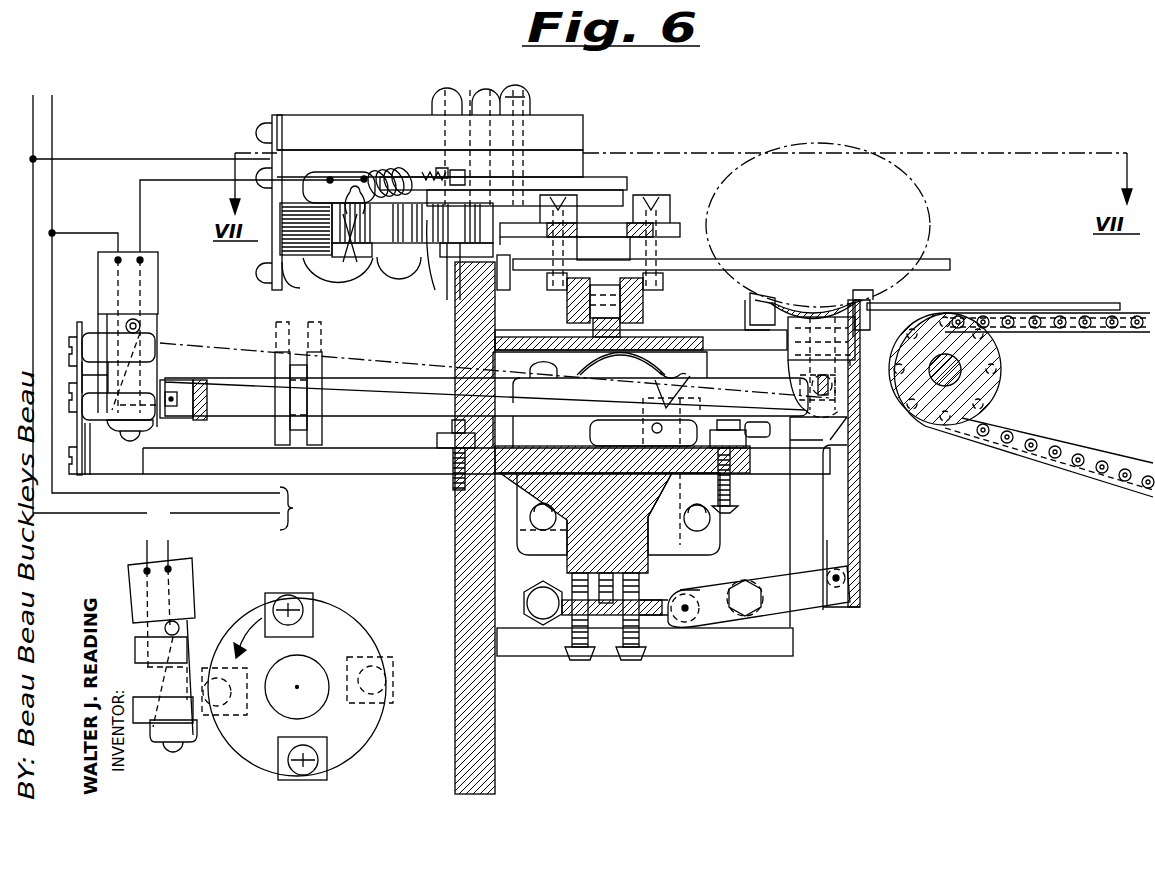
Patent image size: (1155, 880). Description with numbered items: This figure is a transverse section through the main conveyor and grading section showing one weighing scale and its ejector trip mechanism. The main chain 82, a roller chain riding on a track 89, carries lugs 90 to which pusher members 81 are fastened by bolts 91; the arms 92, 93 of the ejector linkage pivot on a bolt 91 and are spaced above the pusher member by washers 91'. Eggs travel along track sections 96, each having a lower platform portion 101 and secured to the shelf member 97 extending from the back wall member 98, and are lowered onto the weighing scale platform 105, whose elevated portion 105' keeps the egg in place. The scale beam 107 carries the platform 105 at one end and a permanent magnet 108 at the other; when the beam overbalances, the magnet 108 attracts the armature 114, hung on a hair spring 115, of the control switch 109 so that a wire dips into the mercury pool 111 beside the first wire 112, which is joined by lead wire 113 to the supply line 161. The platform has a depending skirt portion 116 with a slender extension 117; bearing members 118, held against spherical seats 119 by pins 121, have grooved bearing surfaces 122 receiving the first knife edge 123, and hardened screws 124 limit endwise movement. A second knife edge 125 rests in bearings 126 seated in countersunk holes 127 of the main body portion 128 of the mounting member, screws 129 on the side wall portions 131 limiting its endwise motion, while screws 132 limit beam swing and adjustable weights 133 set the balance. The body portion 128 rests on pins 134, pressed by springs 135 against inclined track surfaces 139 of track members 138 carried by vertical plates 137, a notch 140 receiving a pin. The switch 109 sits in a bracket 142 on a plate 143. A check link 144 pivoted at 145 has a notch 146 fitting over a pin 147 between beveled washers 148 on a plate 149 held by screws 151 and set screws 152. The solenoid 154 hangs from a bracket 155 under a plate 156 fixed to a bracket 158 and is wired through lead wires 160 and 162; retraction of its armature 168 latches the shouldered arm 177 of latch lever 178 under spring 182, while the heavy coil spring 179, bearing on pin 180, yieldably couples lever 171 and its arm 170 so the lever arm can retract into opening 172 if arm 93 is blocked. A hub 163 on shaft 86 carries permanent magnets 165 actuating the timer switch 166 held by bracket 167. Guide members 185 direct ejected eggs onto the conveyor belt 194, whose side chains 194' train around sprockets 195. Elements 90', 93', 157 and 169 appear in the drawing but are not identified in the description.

The pusher member 81 is at (818, 258).
The main chain 82 is at (640, 318).
The shaft 86 is at (315, 705).
The track 89 is at (578, 320).
The lugs 90 is at (731, 273).
The nut 90' is at (588, 288).
The bolts 91 is at (615, 251).
The washers 91' is at (577, 242).
The arm 92 is at (618, 243).
The arm 93 is at (590, 235).
The plate flange 93' is at (517, 242).
The track sections 96 is at (745, 322).
The shelf member 97 is at (640, 380).
The back wall member 98 is at (455, 550).
The lower platform portion 101 is at (748, 302).
The weighing scale platform 105 is at (812, 341).
The elevated portion 105' is at (901, 307).
The scale beam 107 is at (348, 355).
The permanent magnet 108 is at (200, 400).
The control switch 109 is at (158, 286).
The pool of mercury 111 is at (160, 425).
The first wire 112 is at (97, 280).
The lead wire 113 is at (78, 233).
The armature 114 is at (158, 328).
The hair spring 115 is at (150, 322).
The skirt portion 116 is at (845, 383).
The extension 117 is at (858, 500).
The bearing members 118 is at (800, 388).
The spherical seats 119 is at (830, 373).
The pins 121 is at (795, 363).
The grooved bearing surfaces 122 is at (848, 405).
The first knife edge 123 is at (850, 418).
The hardened screws 124 is at (860, 432).
The second knife edge 125 is at (657, 388).
The bearings 126 is at (690, 402).
The countersunk holes 127 is at (648, 430).
The main body portion 128 is at (566, 448).
The screws 129 is at (678, 385).
The side wall portions 131 is at (380, 472).
The screws 132 is at (447, 435).
The adjustable weights 133 is at (275, 370).
The pins 134 is at (543, 530).
The springs 135 is at (646, 360).
The vertical plates 137 is at (770, 482).
The track members 138 is at (782, 562).
The track surfaces 139 is at (680, 512).
The notch 140 is at (692, 528).
The bracket 142 is at (97, 430).
The plate 143 is at (77, 323).
The check link 144 is at (800, 606).
The pivot 145 is at (840, 578).
The notch 146 is at (683, 612).
The pin 147 is at (688, 614).
The beveled washers 148 is at (695, 600).
The plate 149 is at (648, 598).
The screws 151 is at (607, 640).
The screws 152 is at (628, 662).
The solenoid 154 is at (305, 268).
The bracket 155 is at (272, 246).
The plate 156 is at (365, 106).
The bolt 157 is at (510, 95).
The bracket 158 is at (570, 160).
The lead wire 160 is at (200, 183).
The supply line 161 is at (307, 508).
The lead wire 162 is at (184, 160).
The hub 163 is at (360, 625).
The permanent magnets 165 is at (298, 597).
The timer switch 166 is at (180, 598).
The bracket 167 is at (143, 727).
The armature 168 is at (330, 284).
The spring 169 is at (368, 280).
The arm 170 is at (390, 245).
The lever 171 is at (493, 222).
The opening 172 is at (505, 268).
The shouldered arm 177 is at (433, 270).
The latch lever 178 is at (468, 90).
The coil spring 179 is at (442, 170).
The pin 180 is at (458, 170).
The spring 182 is at (425, 174).
The adjustable guide members 185 is at (1010, 306).
The endless conveyor belt 194 is at (1039, 457).
The endless chains 194' is at (1022, 372).
The sprockets 195 is at (1002, 378).